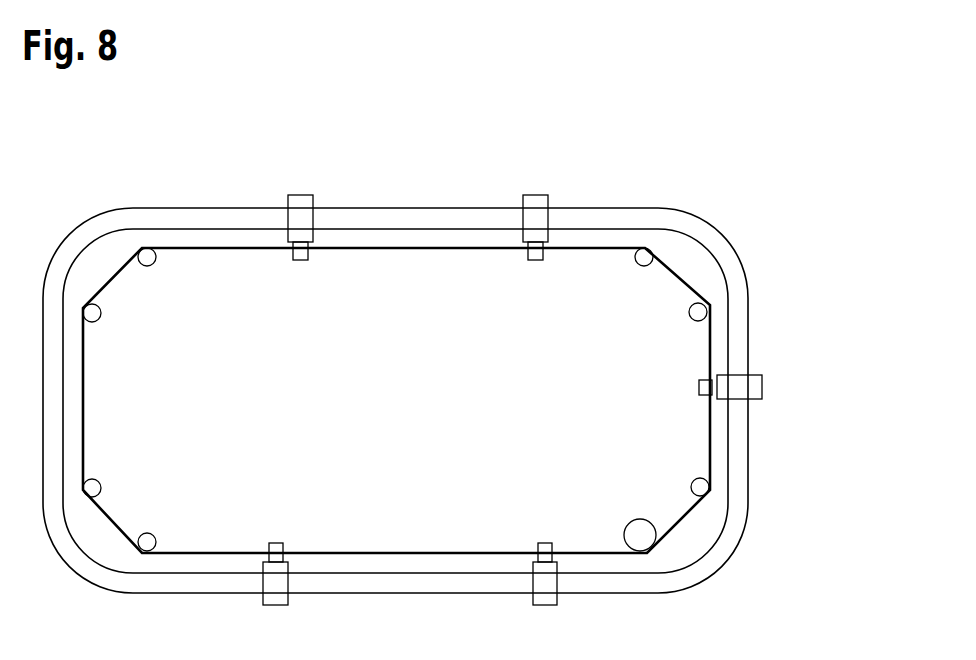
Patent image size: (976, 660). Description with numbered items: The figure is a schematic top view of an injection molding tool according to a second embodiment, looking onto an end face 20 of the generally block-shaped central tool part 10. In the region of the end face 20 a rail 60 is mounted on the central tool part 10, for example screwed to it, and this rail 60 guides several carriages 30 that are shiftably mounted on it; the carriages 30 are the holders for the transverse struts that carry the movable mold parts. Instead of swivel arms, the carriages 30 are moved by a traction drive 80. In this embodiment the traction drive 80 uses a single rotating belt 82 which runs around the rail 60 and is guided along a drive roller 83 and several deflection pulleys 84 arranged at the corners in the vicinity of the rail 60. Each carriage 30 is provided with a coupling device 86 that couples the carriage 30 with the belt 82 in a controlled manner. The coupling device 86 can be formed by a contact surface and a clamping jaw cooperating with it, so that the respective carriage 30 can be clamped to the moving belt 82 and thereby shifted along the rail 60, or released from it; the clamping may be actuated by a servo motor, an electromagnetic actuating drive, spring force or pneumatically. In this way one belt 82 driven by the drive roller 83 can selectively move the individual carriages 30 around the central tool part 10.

The central tool part 10 is at (702, 170).
The end face 20 is at (485, 423).
The carriage 30 is at (303, 205).
The rail 60 is at (745, 487).
The traction drive 80 is at (397, 402).
The belt 82 is at (395, 552).
The drive roller 83 is at (630, 522).
The deflection pulley 84 is at (147, 257).
The coupling device 86 is at (300, 262).